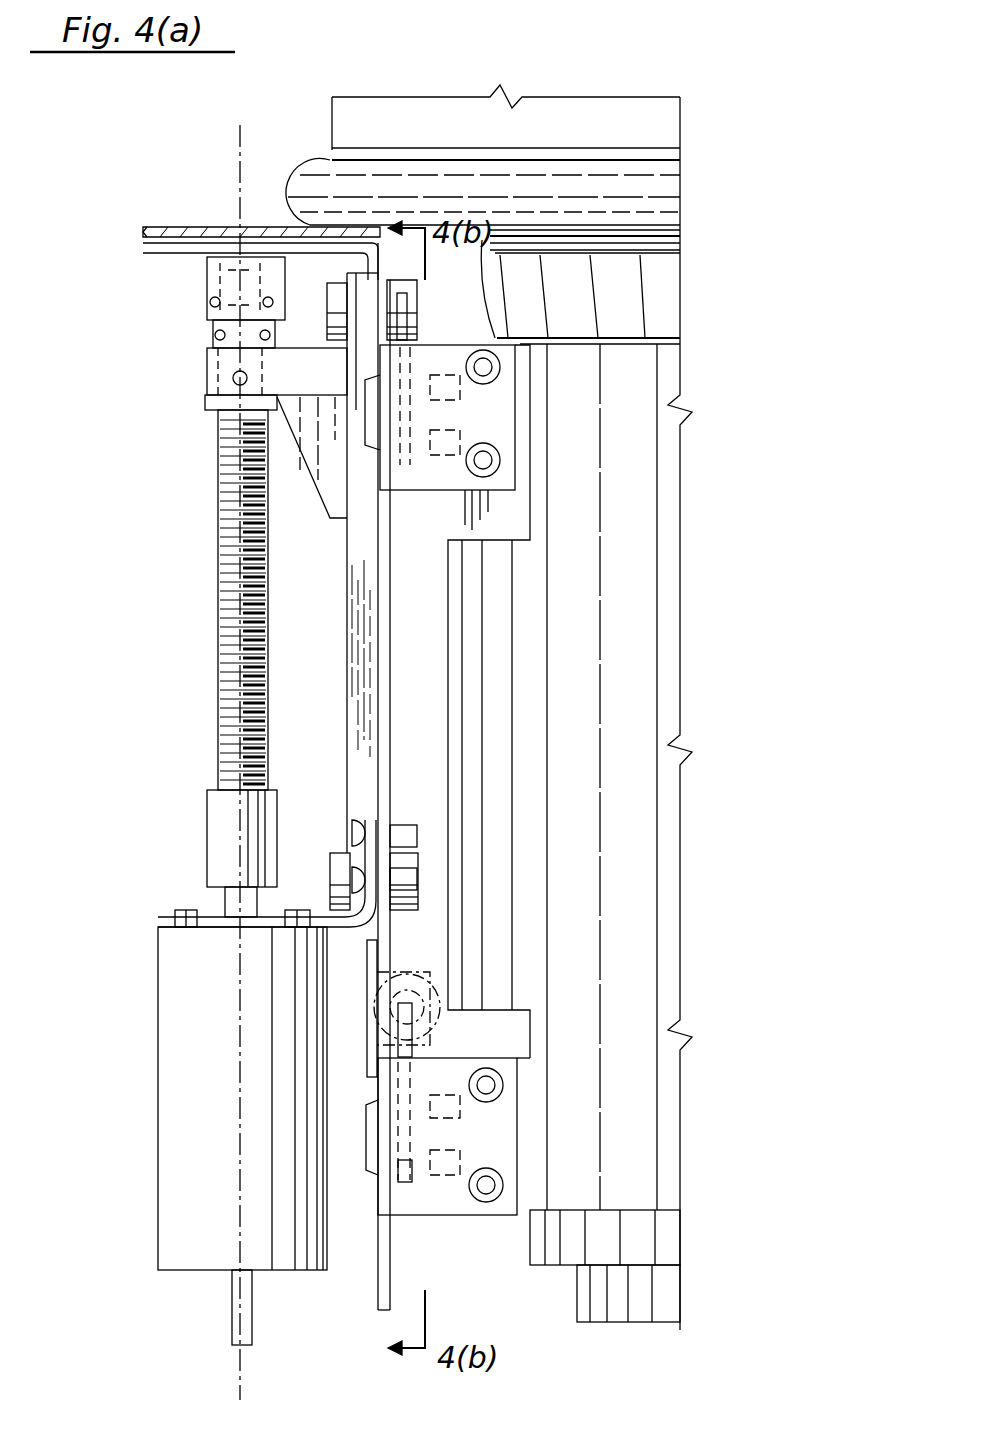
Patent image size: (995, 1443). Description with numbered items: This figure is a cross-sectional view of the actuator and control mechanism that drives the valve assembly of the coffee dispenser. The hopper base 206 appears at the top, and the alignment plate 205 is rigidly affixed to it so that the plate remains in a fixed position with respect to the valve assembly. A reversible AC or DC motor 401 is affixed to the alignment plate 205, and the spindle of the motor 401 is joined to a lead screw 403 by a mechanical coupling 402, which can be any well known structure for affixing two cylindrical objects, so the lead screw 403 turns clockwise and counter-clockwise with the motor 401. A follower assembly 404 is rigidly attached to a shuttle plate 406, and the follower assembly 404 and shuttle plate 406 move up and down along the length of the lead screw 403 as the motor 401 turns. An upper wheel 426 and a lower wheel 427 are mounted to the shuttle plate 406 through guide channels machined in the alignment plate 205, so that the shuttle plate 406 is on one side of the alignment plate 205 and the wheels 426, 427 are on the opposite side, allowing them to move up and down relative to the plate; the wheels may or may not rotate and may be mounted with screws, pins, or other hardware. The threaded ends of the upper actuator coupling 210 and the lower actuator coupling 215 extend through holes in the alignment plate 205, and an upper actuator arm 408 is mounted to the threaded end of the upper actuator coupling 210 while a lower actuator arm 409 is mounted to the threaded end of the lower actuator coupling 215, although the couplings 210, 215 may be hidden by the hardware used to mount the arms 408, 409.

The alignment plate 205 is at (383, 688).
The hopper base 206 is at (655, 186).
The actuator coupling 210 is at (420, 410).
The lower actuator coupling 215 is at (425, 1135).
The motor 401 is at (185, 1078).
The mechanical coupling 402 is at (225, 830).
The lead screw 403 is at (218, 620).
The follower assembly 404 is at (207, 382).
The shuttle plate 406 is at (355, 625).
The upper actuator arm 408 is at (407, 312).
The lower actuator arm 409 is at (400, 1175).
The upper wheel 426 is at (423, 287).
The lower wheel 427 is at (400, 853).